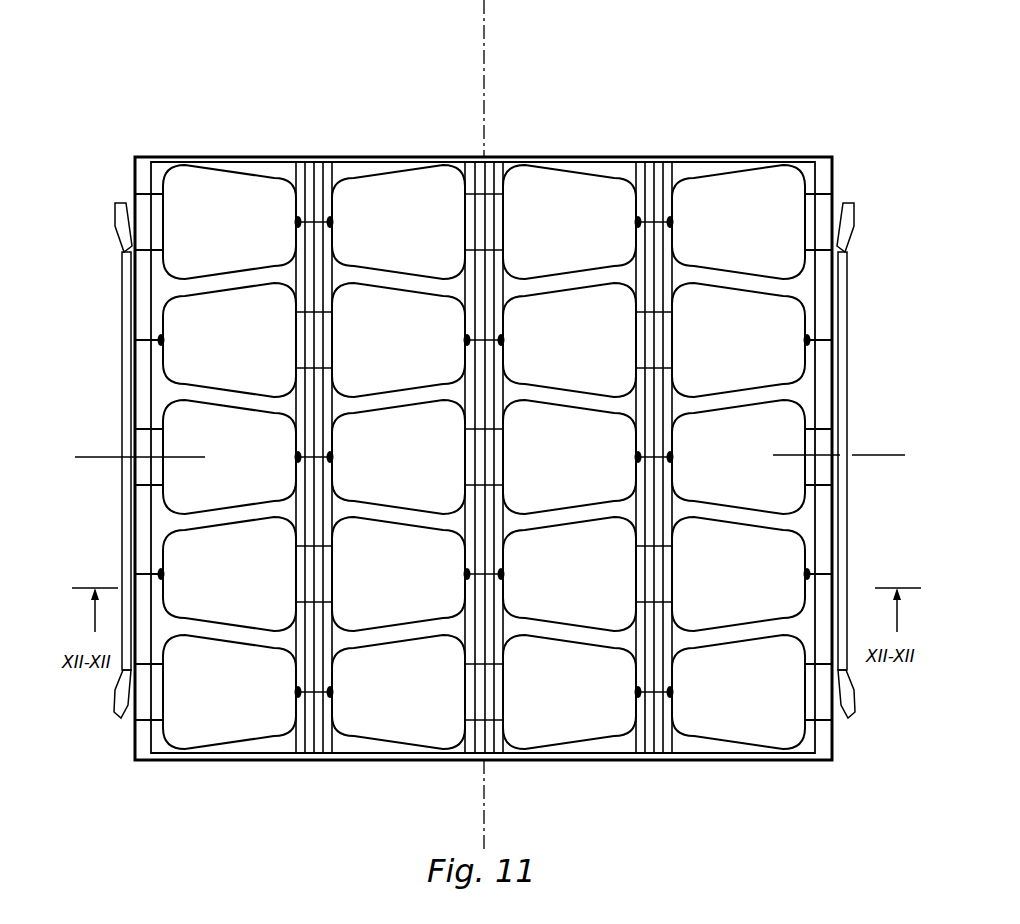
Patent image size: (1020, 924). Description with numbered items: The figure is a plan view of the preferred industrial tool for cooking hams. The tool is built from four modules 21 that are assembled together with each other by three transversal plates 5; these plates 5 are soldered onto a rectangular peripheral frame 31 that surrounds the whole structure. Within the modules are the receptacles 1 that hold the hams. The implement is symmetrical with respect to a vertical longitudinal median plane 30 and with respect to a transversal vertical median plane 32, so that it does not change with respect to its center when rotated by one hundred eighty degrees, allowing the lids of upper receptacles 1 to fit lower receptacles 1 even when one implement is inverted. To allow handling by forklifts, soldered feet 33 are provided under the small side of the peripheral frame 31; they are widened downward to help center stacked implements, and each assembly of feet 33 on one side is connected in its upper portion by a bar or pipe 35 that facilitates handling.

The receptacle 1 is at (573, 236).
The transversal plate 5 is at (313, 158).
The module 21 is at (428, 143).
The vertical longitudinal median plane 30 is at (861, 455).
The peripheral frame 31 is at (746, 156).
The transversal vertical median plane 32 is at (487, 14).
The foot 33 is at (856, 218).
The bar or pipe 35 is at (126, 354).